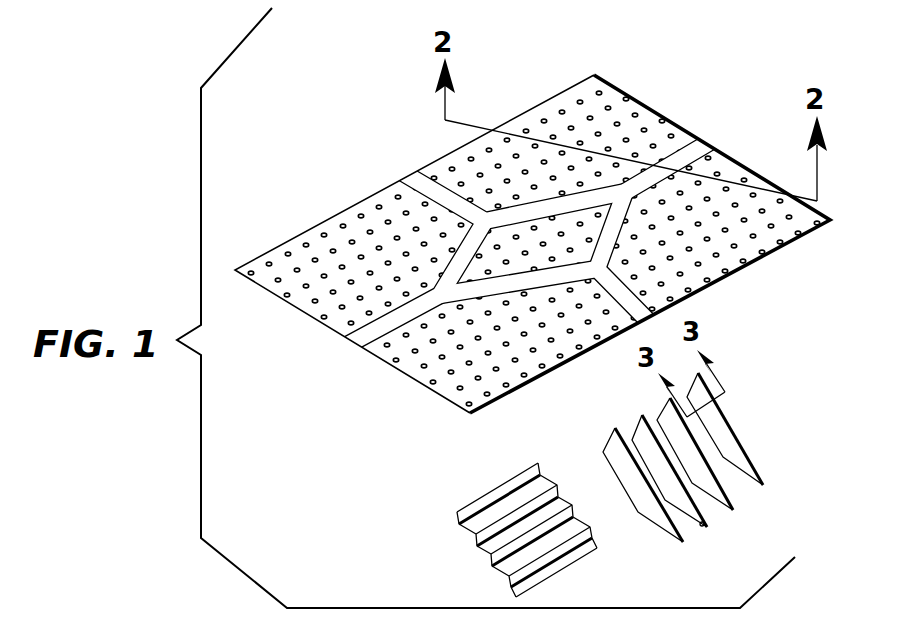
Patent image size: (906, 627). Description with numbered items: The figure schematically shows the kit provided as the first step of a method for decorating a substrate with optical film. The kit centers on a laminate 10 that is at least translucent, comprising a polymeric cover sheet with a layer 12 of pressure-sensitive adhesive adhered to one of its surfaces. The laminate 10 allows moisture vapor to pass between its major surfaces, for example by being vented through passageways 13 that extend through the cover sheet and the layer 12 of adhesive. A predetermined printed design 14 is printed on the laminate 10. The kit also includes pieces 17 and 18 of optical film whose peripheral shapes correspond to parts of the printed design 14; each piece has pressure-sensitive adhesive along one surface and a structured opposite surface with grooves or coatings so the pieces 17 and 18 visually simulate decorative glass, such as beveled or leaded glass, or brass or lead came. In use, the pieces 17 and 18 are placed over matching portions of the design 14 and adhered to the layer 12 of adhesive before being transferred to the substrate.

The laminate 10 is at (532, 223).
The layer of pressure-sensitive adhesive 12 is at (532, 253).
The passageways 13 is at (361, 213).
The printed design 14 is at (397, 326).
The piece of optical film 17 is at (558, 493).
The piece of optical film 18 is at (760, 472).